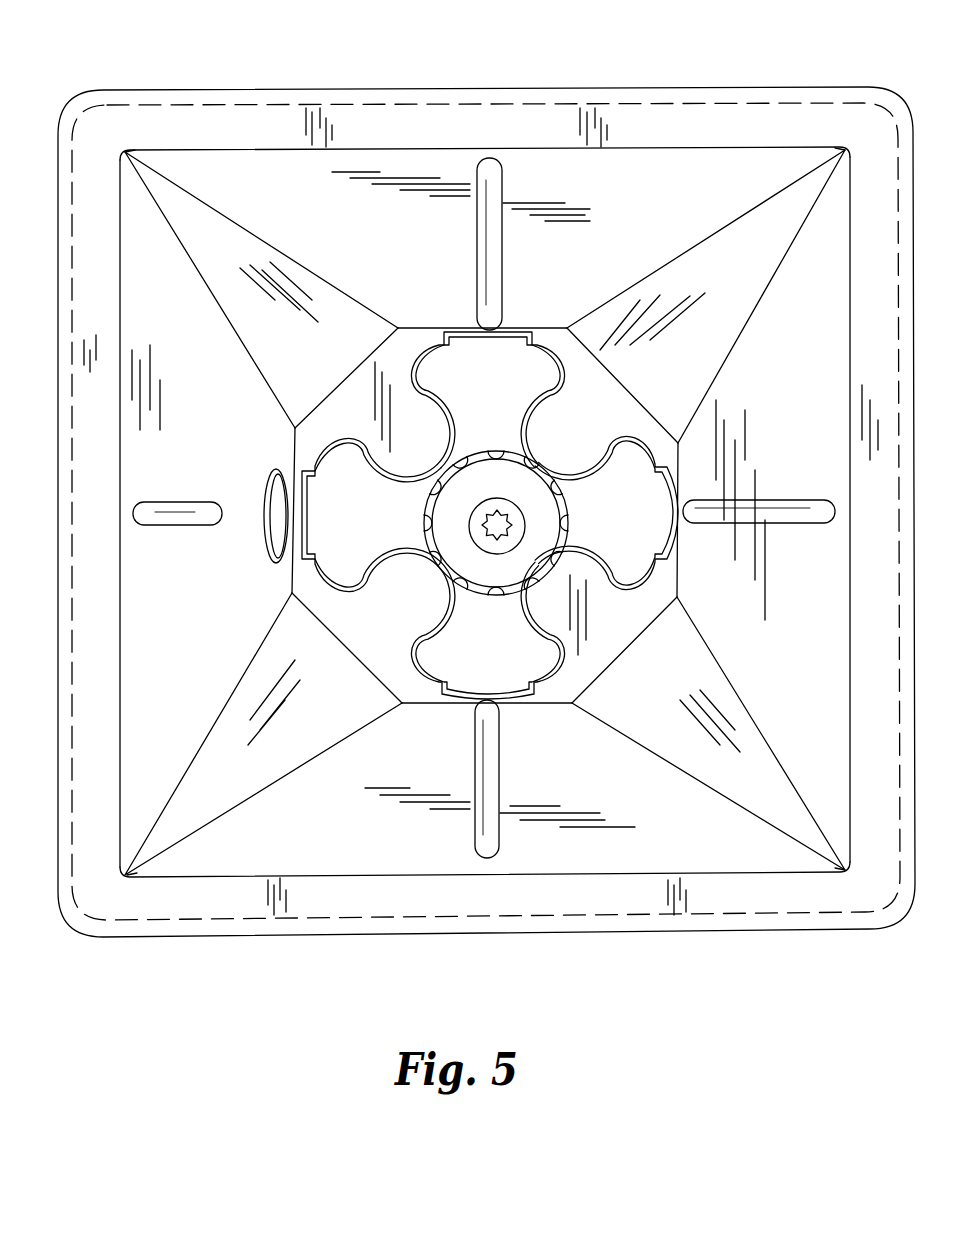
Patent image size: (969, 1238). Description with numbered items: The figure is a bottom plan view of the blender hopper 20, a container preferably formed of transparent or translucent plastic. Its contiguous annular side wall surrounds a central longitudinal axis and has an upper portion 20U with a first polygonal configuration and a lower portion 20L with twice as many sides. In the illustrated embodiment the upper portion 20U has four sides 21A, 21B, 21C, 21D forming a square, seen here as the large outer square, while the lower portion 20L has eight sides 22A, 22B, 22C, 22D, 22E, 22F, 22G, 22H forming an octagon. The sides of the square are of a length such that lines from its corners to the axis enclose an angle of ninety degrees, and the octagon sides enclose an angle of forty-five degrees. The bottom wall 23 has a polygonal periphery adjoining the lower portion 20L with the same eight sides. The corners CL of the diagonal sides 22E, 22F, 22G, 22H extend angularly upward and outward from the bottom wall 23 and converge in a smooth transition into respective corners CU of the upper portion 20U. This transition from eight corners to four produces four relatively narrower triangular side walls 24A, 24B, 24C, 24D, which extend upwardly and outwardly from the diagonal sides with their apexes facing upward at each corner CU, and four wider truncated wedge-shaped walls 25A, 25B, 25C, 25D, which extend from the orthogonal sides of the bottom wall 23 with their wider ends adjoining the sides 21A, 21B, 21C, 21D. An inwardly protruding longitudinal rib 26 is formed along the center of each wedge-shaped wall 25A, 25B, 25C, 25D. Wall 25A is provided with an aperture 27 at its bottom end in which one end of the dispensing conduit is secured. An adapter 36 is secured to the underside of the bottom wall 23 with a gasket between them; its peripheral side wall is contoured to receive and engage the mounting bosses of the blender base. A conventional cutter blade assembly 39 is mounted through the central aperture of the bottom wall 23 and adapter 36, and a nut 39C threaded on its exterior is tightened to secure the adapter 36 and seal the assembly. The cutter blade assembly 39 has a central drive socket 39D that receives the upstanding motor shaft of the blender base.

The hopper 20 is at (784, 57).
The upper portion 20U is at (624, 148).
The lower portion 20L is at (437, 704).
The side 21A is at (120, 577).
The side 21B is at (850, 652).
The side 21C is at (624, 149).
The side 21D is at (334, 875).
The side 22A is at (293, 560).
The side 22B is at (677, 560).
The side 22C is at (446, 328).
The side 22D is at (548, 704).
The diagonal side 22E is at (615, 377).
The diagonal side 22F is at (384, 687).
The diagonal side 22G is at (347, 378).
The diagonal side 22H is at (592, 682).
The bottom wall 23 is at (382, 631).
The triangular side wall 24A is at (245, 796).
The triangular side wall 24B is at (760, 784).
The triangular side wall 24C is at (295, 339).
The triangular side wall 24D is at (752, 271).
The truncated wedge-shaped wall 25A is at (198, 694).
The truncated wedge-shaped wall 25B is at (810, 384).
The truncated wedge-shaped wall 25C is at (578, 259).
The truncated wedge-shaped wall 25D is at (675, 814).
The longitudinal rib 26 is at (477, 238).
The aperture 27 is at (277, 500).
The adapter 36 is at (558, 626).
The cutter blade assembly 39 is at (517, 500).
The nut 39C is at (566, 506).
The central drive socket 39D is at (482, 527).
The corner CL is at (400, 328).
The corner CU is at (126, 128).